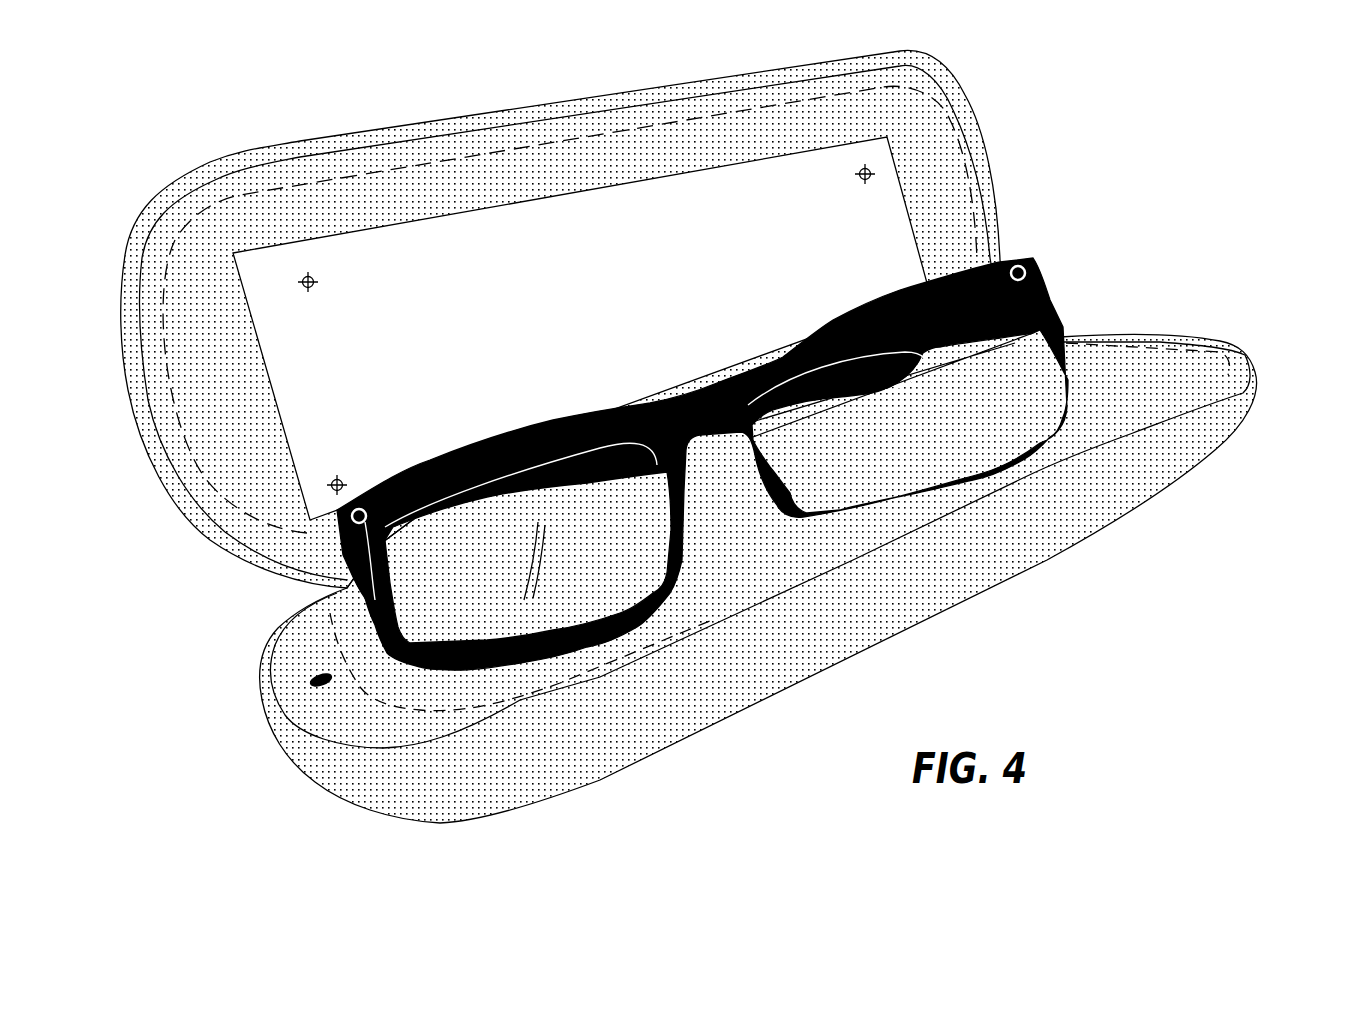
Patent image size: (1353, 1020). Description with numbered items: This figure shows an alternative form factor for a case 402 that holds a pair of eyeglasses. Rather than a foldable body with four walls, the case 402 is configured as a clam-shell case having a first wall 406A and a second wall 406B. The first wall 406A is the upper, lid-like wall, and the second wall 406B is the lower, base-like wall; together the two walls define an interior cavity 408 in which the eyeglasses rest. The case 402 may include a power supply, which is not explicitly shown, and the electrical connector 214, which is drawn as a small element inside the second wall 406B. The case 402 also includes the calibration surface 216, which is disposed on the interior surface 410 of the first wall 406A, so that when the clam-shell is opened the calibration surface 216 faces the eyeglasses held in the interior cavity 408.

The case 402 is at (1252, 392).
The first wall 406A is at (187, 517).
The second wall 406B is at (333, 753).
The interior cavity 408 is at (1108, 372).
The interior surface 410 is at (582, 176).
The calibration surface 216 is at (607, 320).
The electrical connector 214 is at (313, 681).